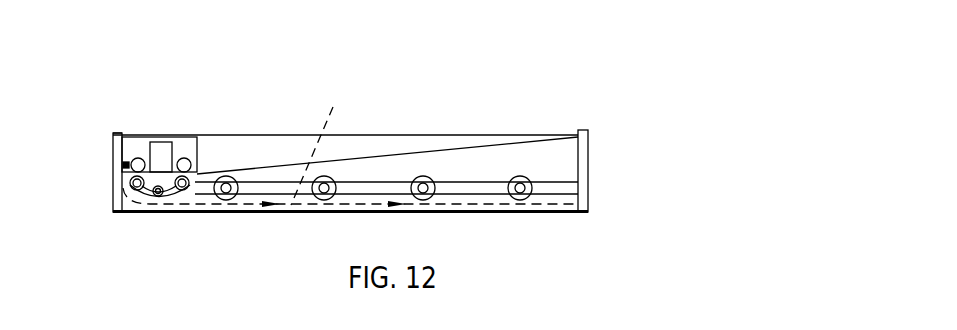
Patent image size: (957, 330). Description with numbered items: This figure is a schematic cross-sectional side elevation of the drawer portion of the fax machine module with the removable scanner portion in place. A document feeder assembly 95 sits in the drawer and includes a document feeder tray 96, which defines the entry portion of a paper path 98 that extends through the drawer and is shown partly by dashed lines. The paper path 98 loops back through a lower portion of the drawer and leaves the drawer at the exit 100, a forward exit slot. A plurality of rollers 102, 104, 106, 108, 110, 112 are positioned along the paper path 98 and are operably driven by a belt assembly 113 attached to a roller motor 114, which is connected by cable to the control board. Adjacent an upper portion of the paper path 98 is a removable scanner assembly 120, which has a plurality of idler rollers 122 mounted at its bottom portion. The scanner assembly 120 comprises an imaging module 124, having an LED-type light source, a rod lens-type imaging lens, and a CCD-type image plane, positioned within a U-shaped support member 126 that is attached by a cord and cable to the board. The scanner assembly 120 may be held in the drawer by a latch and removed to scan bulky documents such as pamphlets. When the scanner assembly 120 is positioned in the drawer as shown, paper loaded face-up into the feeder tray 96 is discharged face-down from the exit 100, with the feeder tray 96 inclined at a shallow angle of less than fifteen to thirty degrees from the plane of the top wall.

The document feeder assembly 95 is at (110, 174).
The document feeder tray 96 is at (397, 153).
The paper path 98 is at (273, 166).
The exit 100 is at (589, 203).
The roller 102 is at (198, 178).
The roller 104 is at (130, 185).
The roller 106 is at (230, 200).
The roller 108 is at (330, 200).
The roller 110 is at (431, 199).
The roller 112 is at (534, 183).
The belt assembly 113 is at (477, 180).
The roller motor 114 is at (155, 196).
The scanner assembly 120 is at (141, 129).
The idler rollers 122 is at (140, 158).
The imaging module 124 is at (170, 160).
The U-shaped support member 126 is at (124, 133).